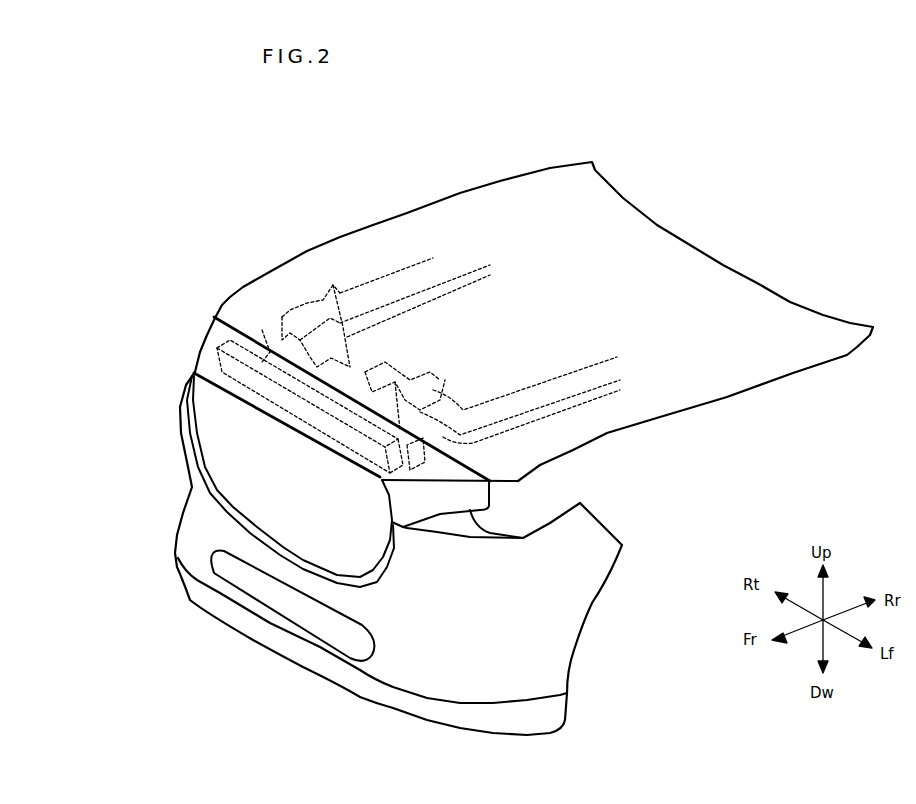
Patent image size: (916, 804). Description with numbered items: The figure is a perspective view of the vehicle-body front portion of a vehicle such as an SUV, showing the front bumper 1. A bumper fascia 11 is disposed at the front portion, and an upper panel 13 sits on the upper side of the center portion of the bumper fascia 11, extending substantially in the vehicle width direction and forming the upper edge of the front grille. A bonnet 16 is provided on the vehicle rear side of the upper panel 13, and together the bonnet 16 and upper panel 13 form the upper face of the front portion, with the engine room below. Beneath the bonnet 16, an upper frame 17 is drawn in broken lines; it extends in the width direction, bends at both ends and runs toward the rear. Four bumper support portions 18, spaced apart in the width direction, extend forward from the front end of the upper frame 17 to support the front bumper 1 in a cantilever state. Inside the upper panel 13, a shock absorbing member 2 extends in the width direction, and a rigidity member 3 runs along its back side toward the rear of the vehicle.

The front bumper 1 is at (134, 296).
The shock absorbing member 2 is at (250, 408).
The rigidity member 3 is at (270, 343).
The bumper fascia 11 is at (573, 653).
The upper panel 13 is at (203, 335).
The bonnet 16 is at (397, 217).
The upper frame 17 is at (378, 352).
The bumper support portion 18 is at (334, 285).